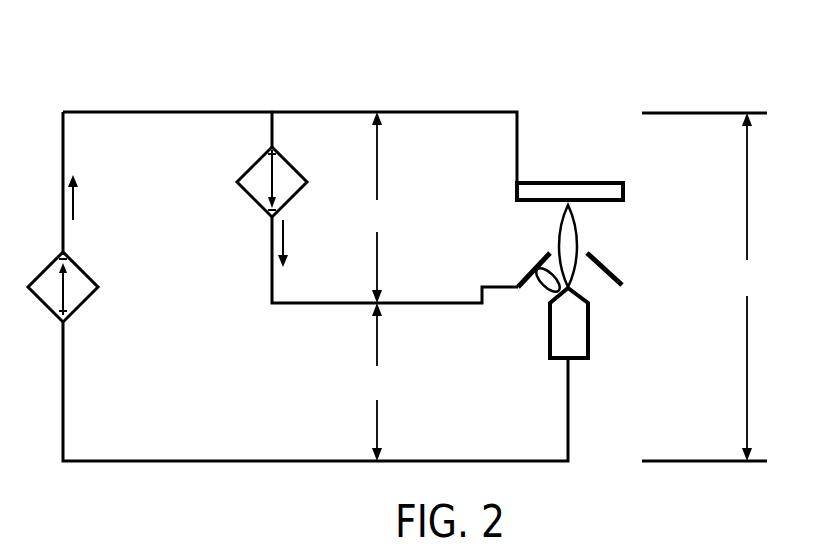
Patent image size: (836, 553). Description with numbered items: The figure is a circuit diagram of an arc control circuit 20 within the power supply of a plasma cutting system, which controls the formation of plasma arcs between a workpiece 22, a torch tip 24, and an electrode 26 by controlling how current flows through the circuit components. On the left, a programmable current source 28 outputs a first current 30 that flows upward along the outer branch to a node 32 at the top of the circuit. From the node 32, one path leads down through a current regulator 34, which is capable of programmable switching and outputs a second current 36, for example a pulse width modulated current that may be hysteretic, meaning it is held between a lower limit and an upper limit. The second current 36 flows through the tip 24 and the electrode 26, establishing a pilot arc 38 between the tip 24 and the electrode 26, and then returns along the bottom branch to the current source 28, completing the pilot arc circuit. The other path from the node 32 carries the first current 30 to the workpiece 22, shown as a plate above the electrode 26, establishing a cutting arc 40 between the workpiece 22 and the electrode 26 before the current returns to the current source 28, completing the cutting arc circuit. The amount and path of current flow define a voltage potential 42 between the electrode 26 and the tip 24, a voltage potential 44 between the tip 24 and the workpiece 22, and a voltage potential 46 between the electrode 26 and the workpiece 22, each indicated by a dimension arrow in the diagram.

The arc control circuit 20 is at (175, 70).
The workpiece 22 is at (642, 195).
The torch tip 24 is at (620, 283).
The electrode 26 is at (588, 332).
The programmable current source 28 is at (80, 305).
The first current 30 is at (74, 205).
The node 32 is at (272, 112).
The current regulator 34 is at (292, 163).
The second current 36 is at (284, 240).
The pilot arc 38 is at (546, 292).
The cutting arc 40 is at (579, 237).
The voltage potential 42 is at (378, 382).
The voltage potential 44 is at (377, 207).
The voltage potential 46 is at (704, 287).